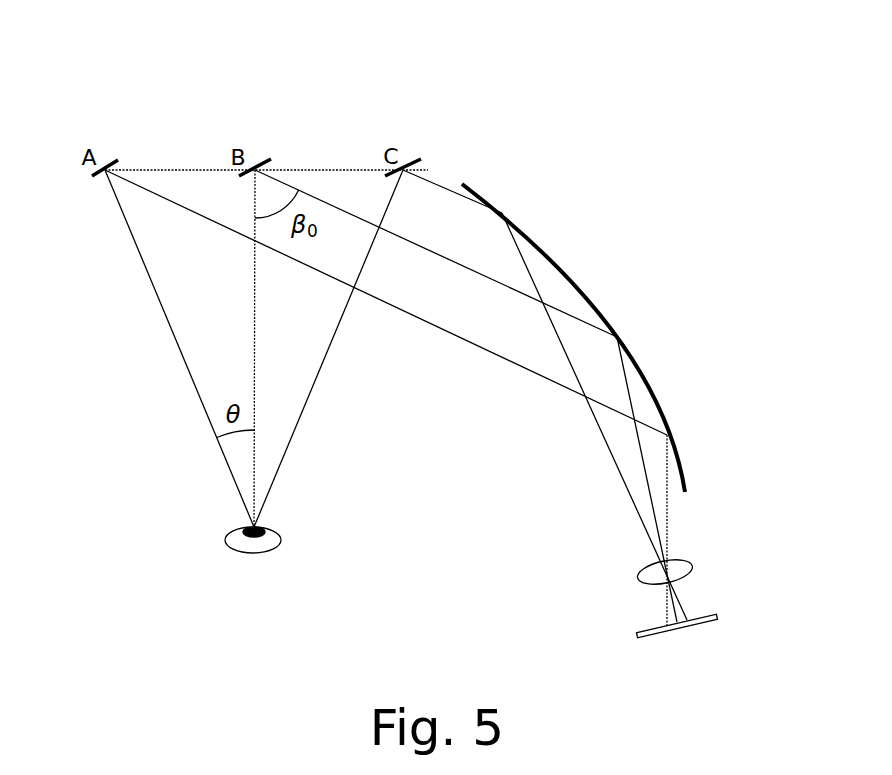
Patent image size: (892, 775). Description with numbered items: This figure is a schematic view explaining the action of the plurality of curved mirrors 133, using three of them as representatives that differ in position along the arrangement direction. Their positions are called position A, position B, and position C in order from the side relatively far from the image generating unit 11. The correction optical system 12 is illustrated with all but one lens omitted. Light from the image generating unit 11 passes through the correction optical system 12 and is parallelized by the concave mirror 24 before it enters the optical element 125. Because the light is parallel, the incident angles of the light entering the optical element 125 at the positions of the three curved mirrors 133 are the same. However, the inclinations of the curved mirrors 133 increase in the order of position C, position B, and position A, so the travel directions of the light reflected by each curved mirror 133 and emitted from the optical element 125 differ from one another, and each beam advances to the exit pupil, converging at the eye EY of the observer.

The optical element 125 is at (177, 112).
The curved mirrors 133 is at (105, 160).
The concave mirror 24 is at (534, 240).
The correction optical system 12 is at (682, 568).
The image generating unit 11 is at (717, 622).
The eye EY is at (282, 540).